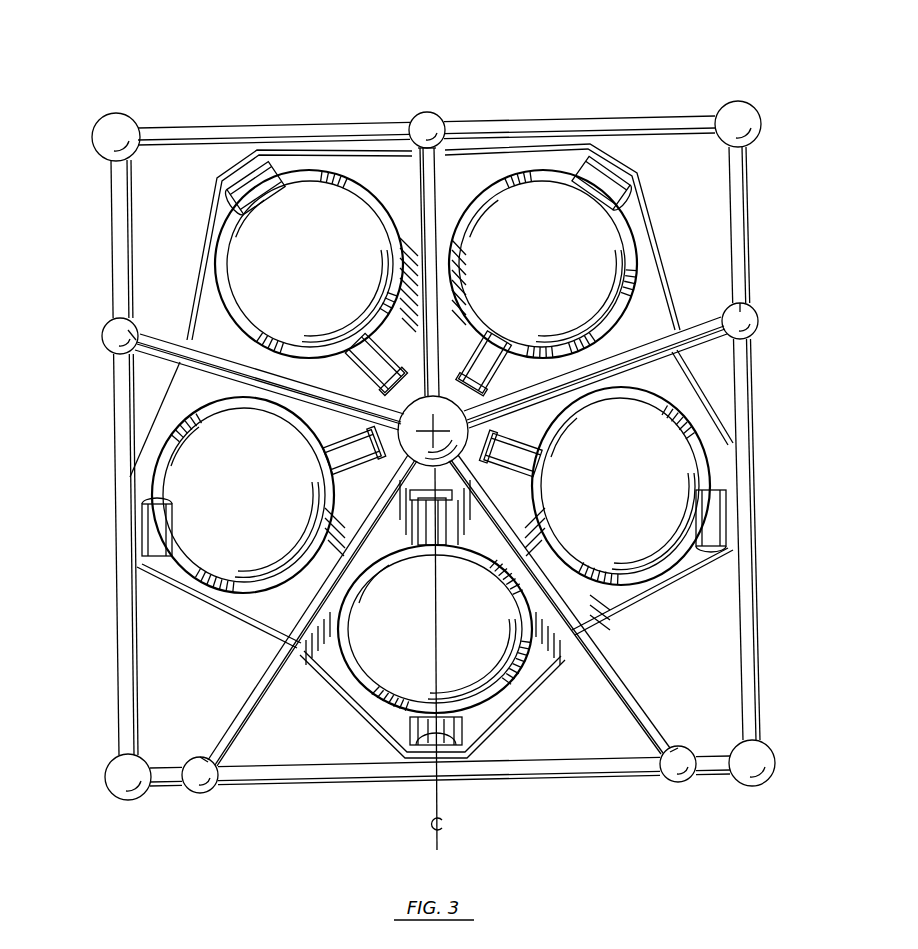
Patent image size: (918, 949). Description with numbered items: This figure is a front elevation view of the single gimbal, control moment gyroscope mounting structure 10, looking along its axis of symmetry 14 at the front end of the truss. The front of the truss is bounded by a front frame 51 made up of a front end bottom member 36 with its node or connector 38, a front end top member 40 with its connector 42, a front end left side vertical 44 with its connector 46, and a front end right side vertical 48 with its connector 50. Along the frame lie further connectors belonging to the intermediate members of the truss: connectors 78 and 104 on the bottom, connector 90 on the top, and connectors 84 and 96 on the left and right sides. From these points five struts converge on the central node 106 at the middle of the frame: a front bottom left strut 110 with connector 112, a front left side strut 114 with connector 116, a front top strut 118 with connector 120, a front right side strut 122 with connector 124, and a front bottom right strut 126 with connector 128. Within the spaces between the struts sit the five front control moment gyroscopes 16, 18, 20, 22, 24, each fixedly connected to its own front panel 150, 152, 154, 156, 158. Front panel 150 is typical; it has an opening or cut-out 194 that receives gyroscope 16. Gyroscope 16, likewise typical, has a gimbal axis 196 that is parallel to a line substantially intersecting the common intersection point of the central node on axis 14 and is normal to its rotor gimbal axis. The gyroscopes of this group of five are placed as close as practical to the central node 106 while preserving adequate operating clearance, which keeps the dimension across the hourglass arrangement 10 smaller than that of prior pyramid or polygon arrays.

The mounting structure 10 is at (578, 79).
The axis of symmetry 14 is at (470, 425).
The control moment gyroscope 16 is at (495, 660).
The control moment gyroscope 18 is at (290, 560).
The control moment gyroscope 20 is at (262, 256).
The control moment gyroscope 22 is at (604, 252).
The control moment gyroscope 24 is at (650, 545).
The front end bottom member 36 is at (289, 768).
The connector 38 is at (118, 768).
The front end top member 40 is at (205, 130).
The connector 42 is at (722, 110).
The front end left side vertical 44 is at (116, 441).
The connector 46 is at (120, 125).
The front end right side vertical 48 is at (757, 598).
The connector 50 is at (746, 786).
The front frame 51 is at (751, 235).
The connector 78 is at (204, 790).
The left ball joint 84 is at (114, 330).
The connector 90 is at (435, 120).
The connector 96 is at (758, 333).
The connector 104 is at (684, 784).
The central node 106 is at (366, 386).
The front bottom left strut 110 is at (245, 700).
The connector 112 is at (199, 754).
The front left side strut 114 is at (172, 346).
The connector 116 is at (134, 322).
The front top strut 118 is at (423, 180).
The connector 120 is at (420, 124).
The front right side strut 122 is at (697, 328).
The connector 124 is at (760, 306).
The front bottom right strut 126 is at (636, 690).
The connector 128 is at (680, 744).
The front panel 150 is at (340, 695).
The front panel 152 is at (180, 388).
The front panel 154 is at (220, 222).
The front panel 156 is at (655, 300).
The front panel 158 is at (640, 615).
The cut-out 194 is at (405, 730).
The gimbal axis 196 is at (441, 824).